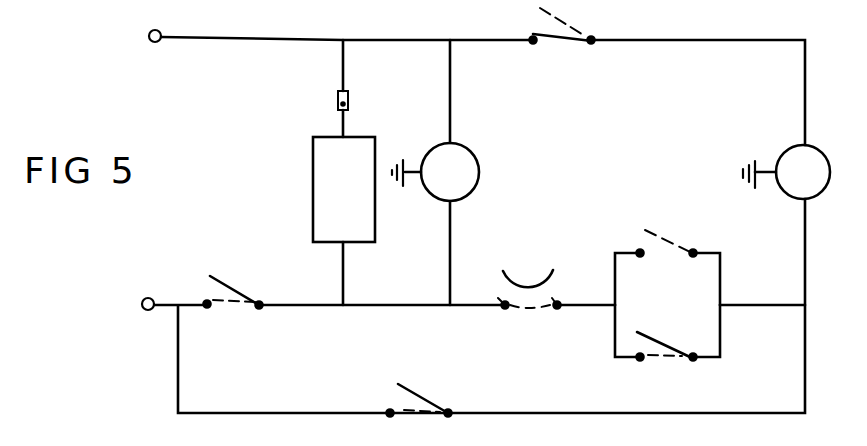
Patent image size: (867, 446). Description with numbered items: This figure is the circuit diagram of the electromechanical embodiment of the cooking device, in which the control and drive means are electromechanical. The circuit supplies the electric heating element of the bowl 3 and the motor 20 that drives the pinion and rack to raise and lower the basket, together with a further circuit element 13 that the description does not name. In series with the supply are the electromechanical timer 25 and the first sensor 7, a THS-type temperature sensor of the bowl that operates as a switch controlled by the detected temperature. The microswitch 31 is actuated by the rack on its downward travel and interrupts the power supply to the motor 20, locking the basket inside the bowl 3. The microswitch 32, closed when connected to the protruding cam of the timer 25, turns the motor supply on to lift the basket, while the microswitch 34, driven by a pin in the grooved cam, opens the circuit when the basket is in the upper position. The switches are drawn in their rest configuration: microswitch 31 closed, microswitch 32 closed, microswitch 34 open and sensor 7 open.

The bowl 3 is at (320, 206).
The first sensor 7 is at (522, 293).
The indicator lamp 13 is at (472, 178).
The second motor 20 is at (792, 158).
The electromechanical timer 25 is at (240, 307).
The microswitch 31 is at (667, 245).
The microswitch 32 is at (667, 362).
The microswitch 34 is at (576, 46).